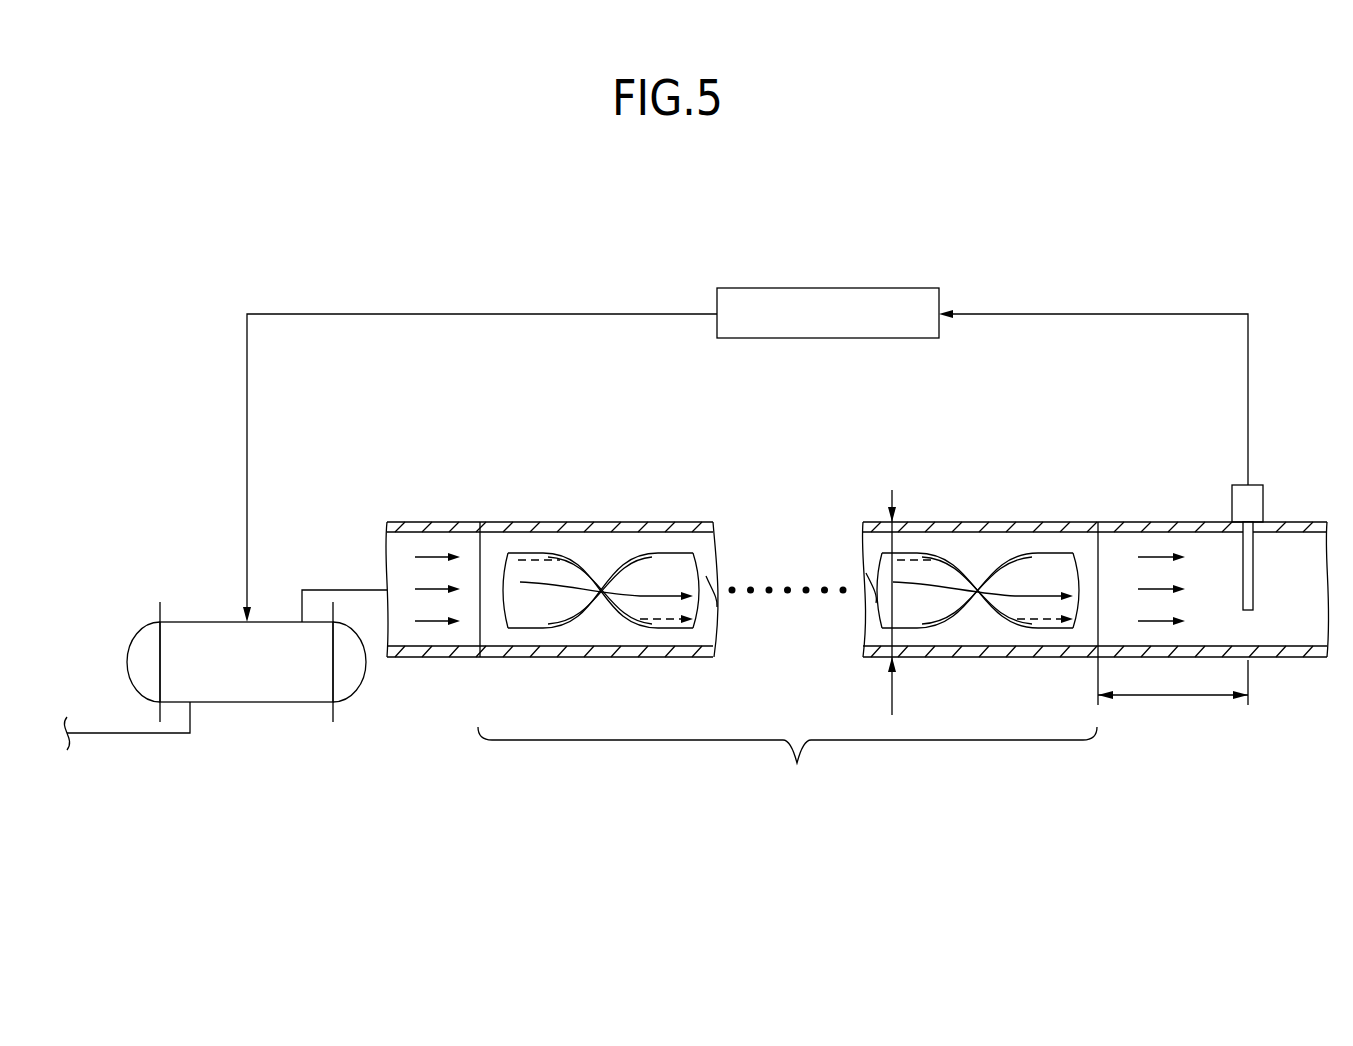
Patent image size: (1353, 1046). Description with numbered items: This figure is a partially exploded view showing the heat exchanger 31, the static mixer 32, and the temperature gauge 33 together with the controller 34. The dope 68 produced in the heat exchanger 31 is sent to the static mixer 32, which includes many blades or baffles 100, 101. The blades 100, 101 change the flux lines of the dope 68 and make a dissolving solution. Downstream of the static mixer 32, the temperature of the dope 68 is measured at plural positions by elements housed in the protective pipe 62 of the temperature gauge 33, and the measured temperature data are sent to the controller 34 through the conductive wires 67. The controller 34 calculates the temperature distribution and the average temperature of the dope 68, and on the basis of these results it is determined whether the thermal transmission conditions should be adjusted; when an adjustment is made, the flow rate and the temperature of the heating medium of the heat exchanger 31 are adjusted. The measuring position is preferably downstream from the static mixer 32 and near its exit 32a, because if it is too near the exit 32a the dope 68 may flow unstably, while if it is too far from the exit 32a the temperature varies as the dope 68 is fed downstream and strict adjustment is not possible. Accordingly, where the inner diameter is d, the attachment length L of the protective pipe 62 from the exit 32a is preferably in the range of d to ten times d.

The heat exchanger 31 is at (267, 673).
The static mixer 32 is at (857, 653).
The exit 32a is at (1098, 565).
The temperature gauge 33 is at (1265, 507).
The controller 34 is at (803, 288).
The protective pipe 62 is at (1248, 587).
The conductive wires 67 is at (1095, 313).
The dope 68 is at (433, 557).
The blade 100 is at (522, 568).
The blade 101 is at (1032, 567).